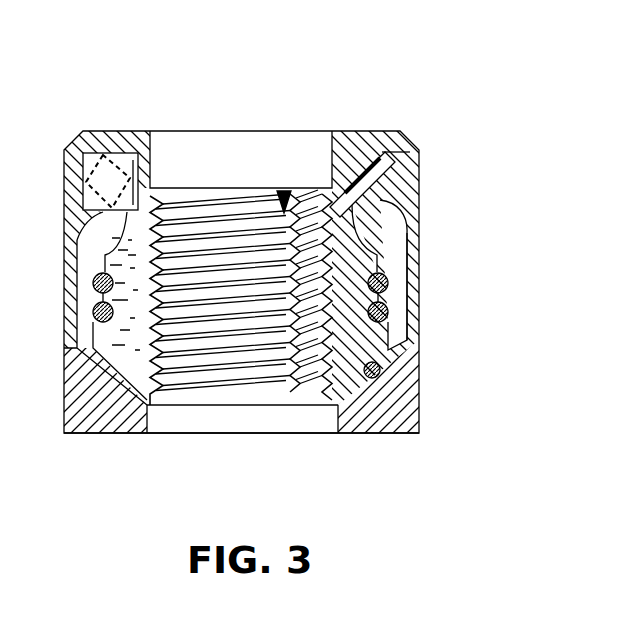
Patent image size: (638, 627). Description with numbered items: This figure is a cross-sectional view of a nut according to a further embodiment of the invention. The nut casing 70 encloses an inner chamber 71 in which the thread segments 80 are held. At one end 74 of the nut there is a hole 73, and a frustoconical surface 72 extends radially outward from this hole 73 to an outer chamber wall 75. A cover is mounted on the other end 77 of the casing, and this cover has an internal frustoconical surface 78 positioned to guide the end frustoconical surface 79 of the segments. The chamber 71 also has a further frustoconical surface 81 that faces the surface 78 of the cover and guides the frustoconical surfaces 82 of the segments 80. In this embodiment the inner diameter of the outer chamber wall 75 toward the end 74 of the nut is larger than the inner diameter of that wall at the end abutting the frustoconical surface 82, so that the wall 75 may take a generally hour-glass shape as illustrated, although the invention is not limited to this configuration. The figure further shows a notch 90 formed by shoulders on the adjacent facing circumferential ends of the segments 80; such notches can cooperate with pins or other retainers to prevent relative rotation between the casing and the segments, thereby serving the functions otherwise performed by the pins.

The nut casing 70 is at (372, 131).
The inner chamber 71 is at (389, 283).
The frustoconical surface 72 is at (380, 378).
The hole 73 is at (337, 408).
The end of the nut 74 is at (108, 433).
The outer chamber wall 75 is at (393, 323).
The other end of the casing 77 is at (70, 141).
The internal frustoconical surface 78 is at (420, 168).
The end frustoconical surface 79 is at (298, 188).
The segments 80 is at (302, 393).
The further frustoconical surface 81 is at (413, 187).
The frustoconical surfaces of the segments 82 is at (413, 217).
The notch 90 is at (280, 188).